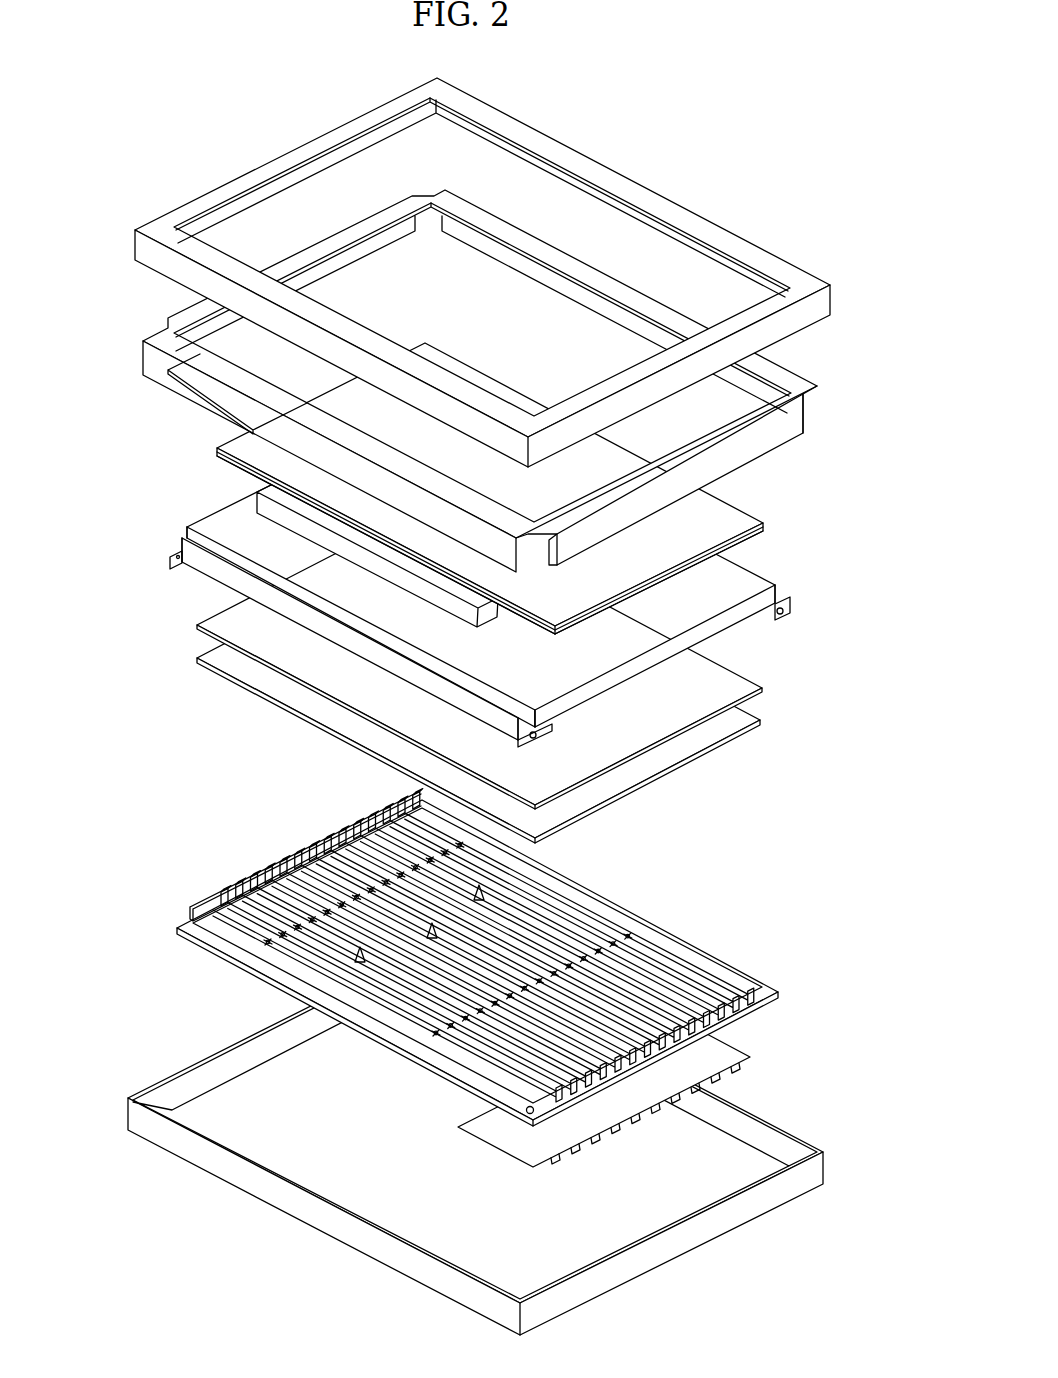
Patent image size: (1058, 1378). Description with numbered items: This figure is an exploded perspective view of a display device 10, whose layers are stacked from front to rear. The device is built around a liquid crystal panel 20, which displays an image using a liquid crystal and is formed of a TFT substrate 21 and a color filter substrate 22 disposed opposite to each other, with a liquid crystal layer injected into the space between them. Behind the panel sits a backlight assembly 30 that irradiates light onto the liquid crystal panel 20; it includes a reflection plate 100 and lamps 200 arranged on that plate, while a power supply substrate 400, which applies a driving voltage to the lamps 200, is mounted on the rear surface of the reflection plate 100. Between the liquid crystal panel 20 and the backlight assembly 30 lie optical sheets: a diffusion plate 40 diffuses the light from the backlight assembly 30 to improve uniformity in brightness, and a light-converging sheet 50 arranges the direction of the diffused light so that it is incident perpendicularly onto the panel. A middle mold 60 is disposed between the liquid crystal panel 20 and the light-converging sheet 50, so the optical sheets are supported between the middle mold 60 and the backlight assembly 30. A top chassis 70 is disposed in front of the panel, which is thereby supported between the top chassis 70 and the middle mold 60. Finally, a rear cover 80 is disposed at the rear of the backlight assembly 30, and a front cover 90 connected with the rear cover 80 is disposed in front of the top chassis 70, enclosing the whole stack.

The display device 10 is at (453, 706).
The liquid crystal panel 20 is at (538, 488).
The TFT substrate 21 is at (750, 535).
The color filter substrate 22 is at (728, 512).
The backlight assembly 30 is at (522, 978).
The diffusion plate 40 is at (753, 729).
The light-converging sheet 50 is at (757, 698).
The middle mold 60 is at (757, 622).
The top chassis 70 is at (788, 430).
The rear cover 80 is at (755, 1210).
The front cover 90 is at (677, 212).
The reflection plate 100 is at (683, 933).
The lamps 200 is at (582, 923).
The power supply substrate 400 is at (730, 1053).